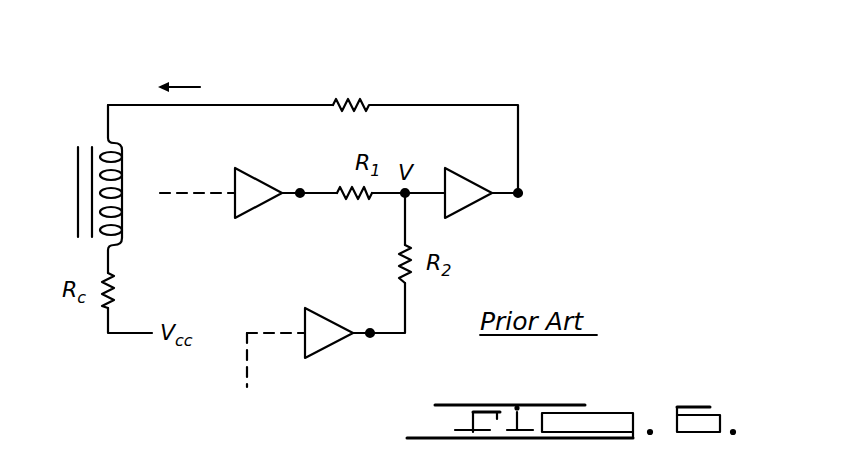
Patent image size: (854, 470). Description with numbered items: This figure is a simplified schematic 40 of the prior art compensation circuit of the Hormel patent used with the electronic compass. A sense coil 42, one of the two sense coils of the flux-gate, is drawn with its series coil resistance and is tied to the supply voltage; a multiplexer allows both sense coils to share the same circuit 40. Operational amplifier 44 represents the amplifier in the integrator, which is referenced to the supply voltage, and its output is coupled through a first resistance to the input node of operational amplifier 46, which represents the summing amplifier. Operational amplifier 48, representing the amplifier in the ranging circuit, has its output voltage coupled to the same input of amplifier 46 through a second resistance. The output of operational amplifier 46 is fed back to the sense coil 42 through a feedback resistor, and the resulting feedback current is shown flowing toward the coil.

The simplified schematic of the compensation circuit 40 is at (607, 111).
The sense coil 42 is at (122, 163).
The operational amplifier 44 is at (253, 215).
The operational amplifier 46 is at (465, 207).
The operational amplifier 48 is at (312, 350).